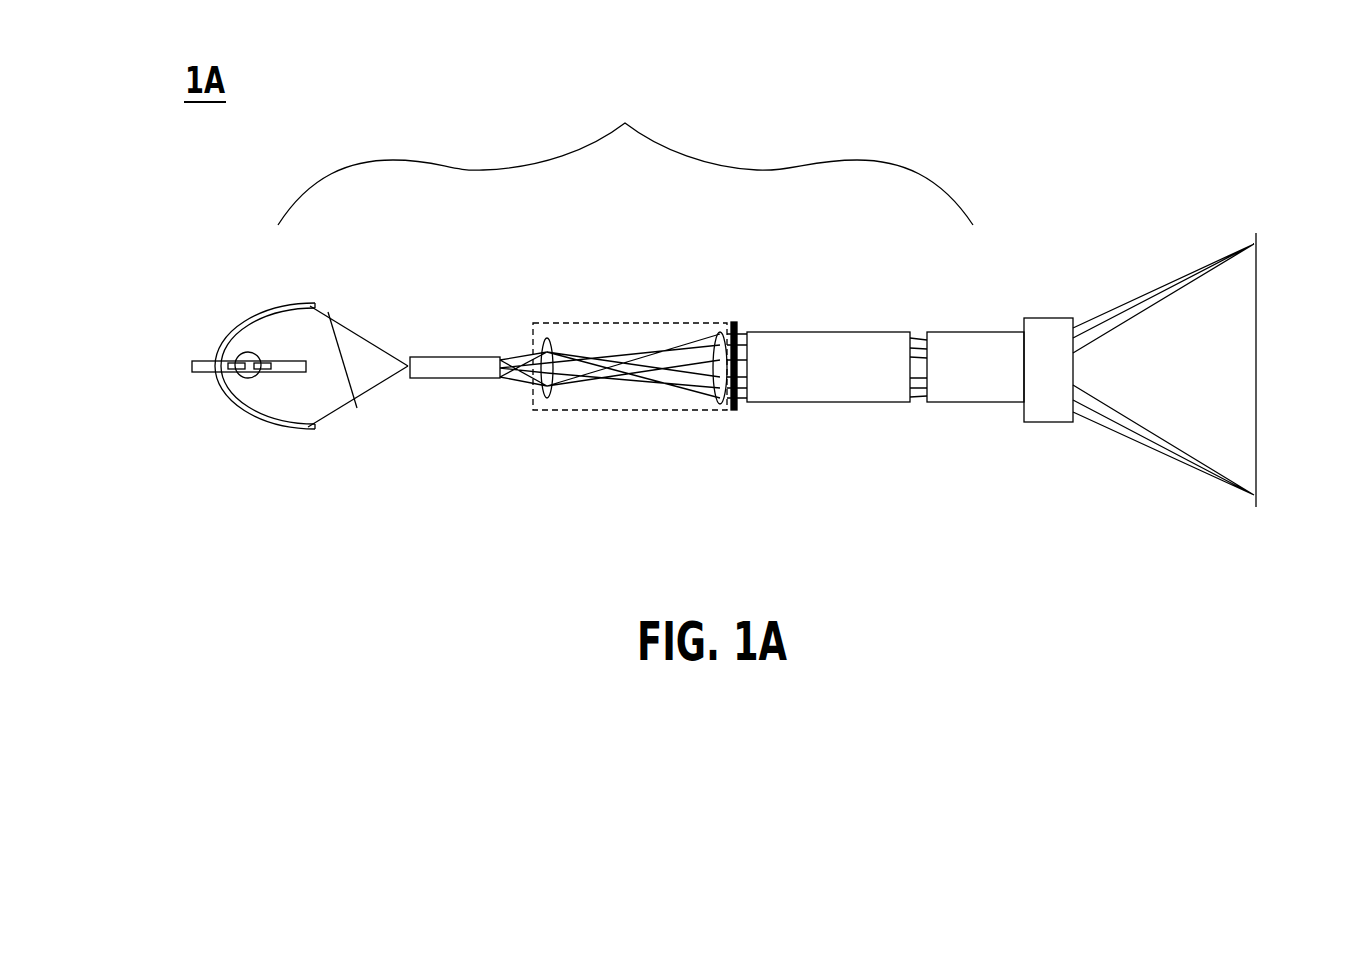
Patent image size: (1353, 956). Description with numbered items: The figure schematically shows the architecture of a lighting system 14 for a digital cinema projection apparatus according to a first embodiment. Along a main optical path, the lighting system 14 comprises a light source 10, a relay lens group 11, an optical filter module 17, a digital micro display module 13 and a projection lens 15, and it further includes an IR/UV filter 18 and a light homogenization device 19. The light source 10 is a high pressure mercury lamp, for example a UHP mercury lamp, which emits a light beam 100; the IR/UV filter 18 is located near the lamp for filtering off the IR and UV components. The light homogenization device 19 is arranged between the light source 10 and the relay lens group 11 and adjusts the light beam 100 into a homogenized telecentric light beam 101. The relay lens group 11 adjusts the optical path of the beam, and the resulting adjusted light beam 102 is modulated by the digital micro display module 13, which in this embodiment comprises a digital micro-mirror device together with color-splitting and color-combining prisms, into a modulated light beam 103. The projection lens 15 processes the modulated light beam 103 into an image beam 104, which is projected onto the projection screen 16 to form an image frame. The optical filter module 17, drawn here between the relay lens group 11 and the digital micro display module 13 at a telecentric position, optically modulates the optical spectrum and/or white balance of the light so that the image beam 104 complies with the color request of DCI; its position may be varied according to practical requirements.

The light source 10 is at (241, 438).
The light beam 100 is at (357, 335).
The IR/UV filter 18 is at (354, 432).
The light homogenization device 19 is at (461, 333).
The relay lens group 11 is at (615, 373).
The homogenized telecentric light beam 101 is at (520, 352).
The adjusted light beam 102 is at (721, 331).
The optical filter module 17 is at (736, 433).
The digital micro display module 13 is at (809, 308).
The modulated light beam 103 is at (921, 333).
The projection lens 15 is at (977, 428).
The image beam 104 is at (1110, 312).
The projection screen 16 is at (1246, 514).
The lighting system 14 is at (625, 157).